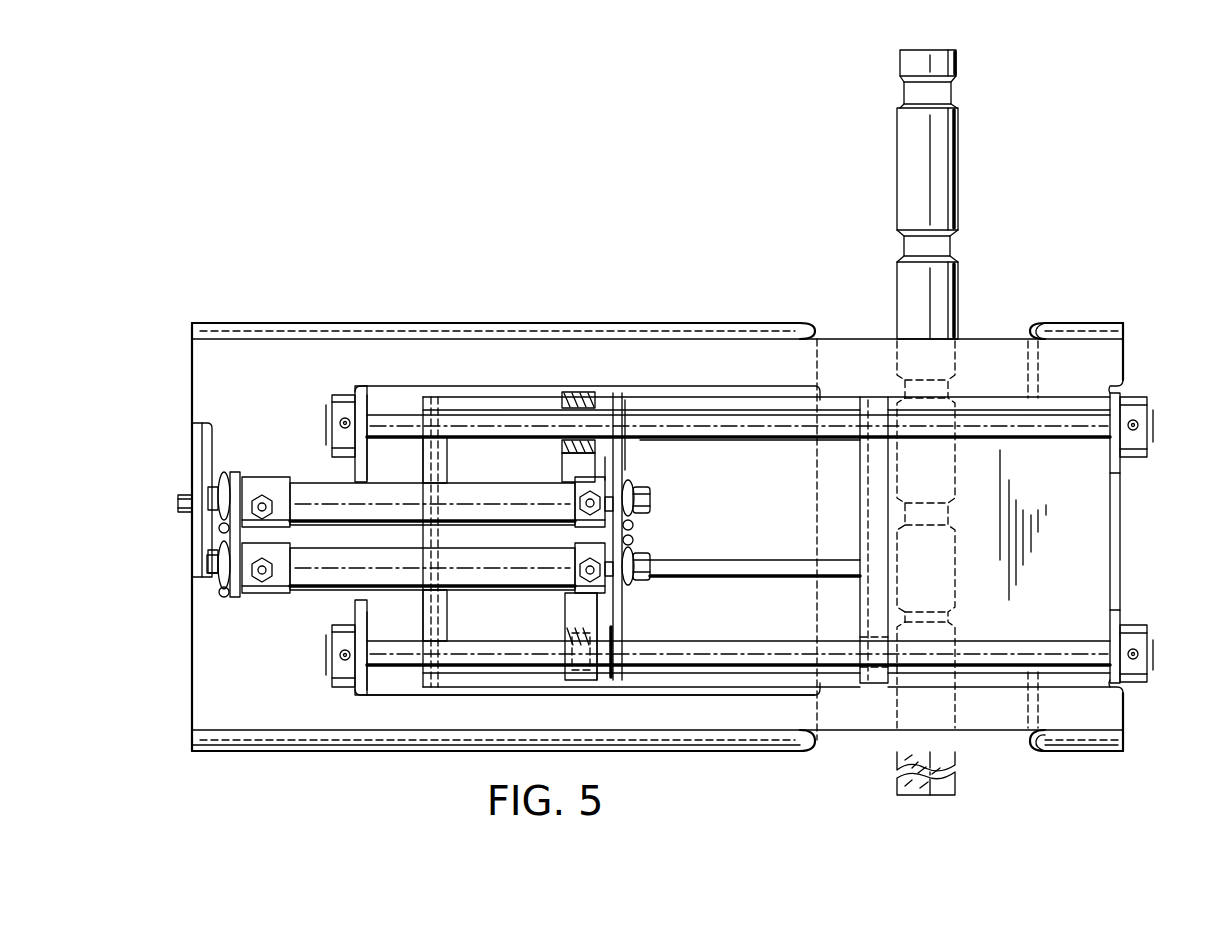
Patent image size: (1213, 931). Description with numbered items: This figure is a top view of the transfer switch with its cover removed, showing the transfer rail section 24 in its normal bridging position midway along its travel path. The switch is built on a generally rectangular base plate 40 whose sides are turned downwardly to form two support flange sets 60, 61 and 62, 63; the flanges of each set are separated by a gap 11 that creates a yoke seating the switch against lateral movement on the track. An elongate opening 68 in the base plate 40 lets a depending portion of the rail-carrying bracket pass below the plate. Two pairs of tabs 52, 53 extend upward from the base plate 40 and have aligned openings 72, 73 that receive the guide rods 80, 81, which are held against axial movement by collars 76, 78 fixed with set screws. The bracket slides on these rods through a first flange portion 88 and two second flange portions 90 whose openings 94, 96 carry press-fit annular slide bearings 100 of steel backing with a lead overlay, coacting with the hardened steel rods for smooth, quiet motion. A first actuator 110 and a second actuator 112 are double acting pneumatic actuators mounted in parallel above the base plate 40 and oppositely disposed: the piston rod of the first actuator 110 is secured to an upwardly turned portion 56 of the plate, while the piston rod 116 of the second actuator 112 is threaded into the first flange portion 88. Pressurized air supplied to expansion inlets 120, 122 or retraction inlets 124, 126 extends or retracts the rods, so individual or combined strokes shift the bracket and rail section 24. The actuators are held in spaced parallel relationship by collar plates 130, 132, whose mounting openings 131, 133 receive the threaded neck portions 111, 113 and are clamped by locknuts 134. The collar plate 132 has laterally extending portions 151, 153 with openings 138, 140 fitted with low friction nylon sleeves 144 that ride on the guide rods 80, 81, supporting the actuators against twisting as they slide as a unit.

The gap 11 is at (985, 748).
The transfer rail section 24 is at (960, 196).
The base plate 40 is at (636, 541).
The tabs 52 is at (366, 630).
The tabs 53 is at (366, 388).
The upwardly turned portion 56 is at (198, 430).
The support flange 60 is at (725, 752).
The support flange 61 is at (1096, 752).
The support flange 62 is at (726, 323).
The support flange 63 is at (1088, 323).
The elongate opening 68 is at (386, 696).
The aligned openings 72 is at (346, 642).
The aligned openings 73 is at (364, 430).
The collars 76 is at (332, 682).
The collars 78 is at (339, 395).
The guide rod 80 is at (786, 641).
The guide rod 81 is at (792, 441).
The first flange portion 88 is at (862, 548).
The second flange portions 90 is at (566, 454).
The openings 94 is at (864, 444).
The openings 96 is at (560, 396).
The annular slide bearings 100 is at (588, 396).
The first actuator 110 is at (443, 464).
The threaded neck portion 111 is at (186, 495).
The second actuator 112 is at (441, 598).
The threaded neck portion 113 is at (214, 578).
The piston rod 116 is at (722, 564).
The expansion inlet 120 is at (555, 508).
The expansion inlet 122 is at (280, 568).
The retraction inlet 124 is at (270, 500).
The retraction inlet 126 is at (572, 570).
The collar plate 130 is at (232, 530).
The mounting openings 131 is at (250, 487).
The collar plate 132 is at (630, 610).
The mounting openings 133 is at (646, 540).
The locknuts 134 is at (226, 474).
The opening 138 is at (636, 428).
The opening 140 is at (599, 682).
The sleeves 144 is at (626, 395).
The laterally extending portion 151 is at (626, 468).
The laterally extending portion 153 is at (624, 620).